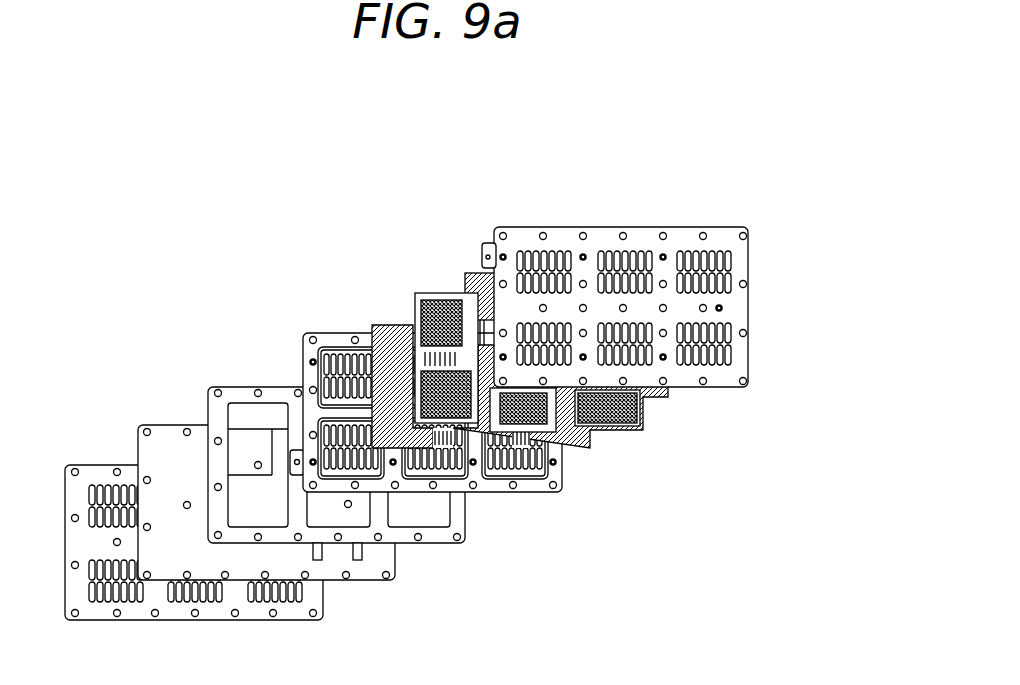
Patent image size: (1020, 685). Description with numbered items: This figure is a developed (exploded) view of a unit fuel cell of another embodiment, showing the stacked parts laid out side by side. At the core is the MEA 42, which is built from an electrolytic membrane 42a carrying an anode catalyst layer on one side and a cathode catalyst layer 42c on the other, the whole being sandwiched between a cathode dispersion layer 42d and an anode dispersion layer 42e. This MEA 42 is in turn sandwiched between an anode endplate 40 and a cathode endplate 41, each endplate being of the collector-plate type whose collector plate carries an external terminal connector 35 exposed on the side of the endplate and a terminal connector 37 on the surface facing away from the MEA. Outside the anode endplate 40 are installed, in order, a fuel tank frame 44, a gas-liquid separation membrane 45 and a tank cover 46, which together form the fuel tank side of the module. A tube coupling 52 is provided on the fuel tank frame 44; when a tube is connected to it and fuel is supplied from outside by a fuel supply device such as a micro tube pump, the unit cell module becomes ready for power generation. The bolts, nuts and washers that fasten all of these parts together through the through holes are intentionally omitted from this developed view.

The external terminal connector 35 is at (488, 245).
The terminal connector 37 is at (661, 360).
The anode endplate 40 is at (532, 480).
The cathode endplate 41 is at (743, 263).
The MEA 42 is at (471, 292).
The electrolytic membrane 42a is at (415, 297).
The cathode catalyst layer 42c is at (417, 266).
The cathode dispersion layer 42d is at (478, 282).
The anode dispersion layer 42e is at (388, 330).
The fuel tank frame 44 is at (232, 392).
The gas-liquid separation membrane 45 is at (165, 432).
The tank cover 46 is at (95, 470).
The tube coupling 52 is at (358, 552).